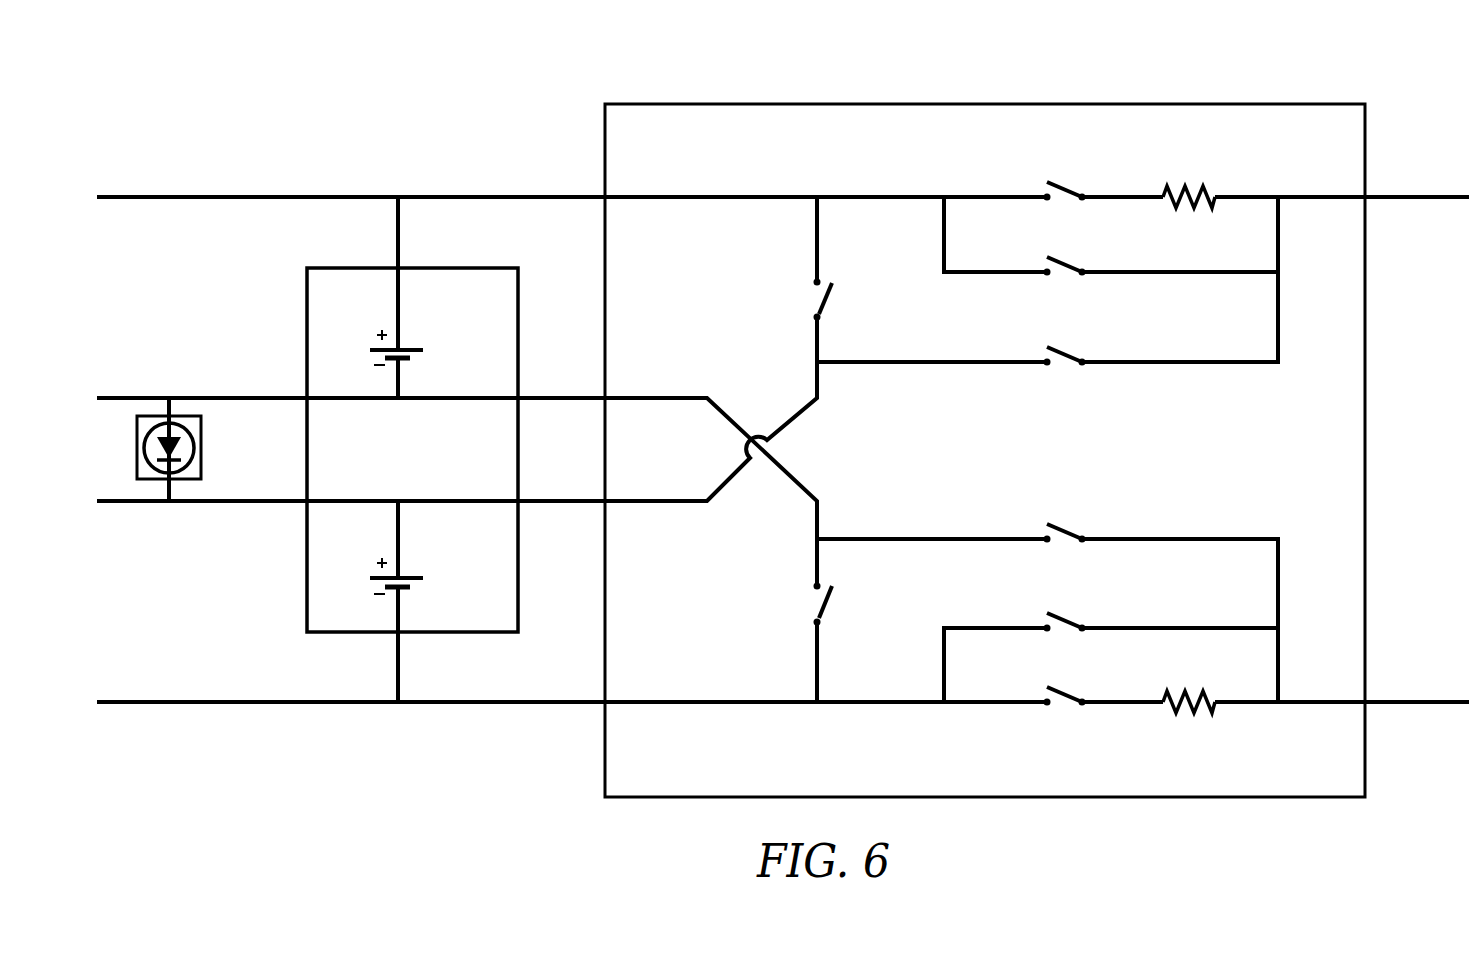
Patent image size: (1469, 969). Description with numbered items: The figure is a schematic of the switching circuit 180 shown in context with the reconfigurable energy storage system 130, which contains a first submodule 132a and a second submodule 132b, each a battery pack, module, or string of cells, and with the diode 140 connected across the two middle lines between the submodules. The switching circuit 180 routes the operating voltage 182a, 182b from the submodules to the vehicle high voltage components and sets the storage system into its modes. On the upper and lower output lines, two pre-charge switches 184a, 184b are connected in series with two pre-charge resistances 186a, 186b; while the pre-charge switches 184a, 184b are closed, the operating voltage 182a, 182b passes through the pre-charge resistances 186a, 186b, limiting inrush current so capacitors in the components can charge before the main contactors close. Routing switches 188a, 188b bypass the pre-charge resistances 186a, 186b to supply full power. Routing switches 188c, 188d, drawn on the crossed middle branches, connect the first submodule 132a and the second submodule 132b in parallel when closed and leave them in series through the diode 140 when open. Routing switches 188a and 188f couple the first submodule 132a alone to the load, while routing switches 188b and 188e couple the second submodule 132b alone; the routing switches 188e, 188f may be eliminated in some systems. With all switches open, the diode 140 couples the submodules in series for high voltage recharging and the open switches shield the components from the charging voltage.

The reconfigurable energy storage system 130 is at (342, 268).
The first submodule 132a is at (410, 350).
The second submodule 132b is at (410, 578).
The diode 140 is at (201, 459).
The switching circuit 180 is at (672, 104).
The operating voltage 182a is at (1425, 197).
The operating voltage 182b is at (1425, 702).
The pre-charge switch 184a is at (1067, 190).
The pre-charge switch 184b is at (1067, 695).
The pre-charge resistance 186a is at (1195, 190).
The pre-charge resistance 186b is at (1195, 695).
The routing switch 188a is at (1067, 265).
The routing switch 188b is at (1067, 621).
The routing switch 188c is at (825, 300).
The routing switch 188d is at (825, 603).
The routing switch 188e is at (1067, 355).
The routing switch 188f is at (1067, 532).